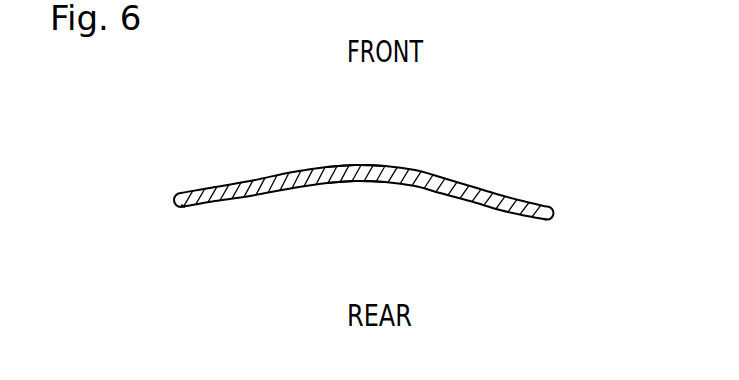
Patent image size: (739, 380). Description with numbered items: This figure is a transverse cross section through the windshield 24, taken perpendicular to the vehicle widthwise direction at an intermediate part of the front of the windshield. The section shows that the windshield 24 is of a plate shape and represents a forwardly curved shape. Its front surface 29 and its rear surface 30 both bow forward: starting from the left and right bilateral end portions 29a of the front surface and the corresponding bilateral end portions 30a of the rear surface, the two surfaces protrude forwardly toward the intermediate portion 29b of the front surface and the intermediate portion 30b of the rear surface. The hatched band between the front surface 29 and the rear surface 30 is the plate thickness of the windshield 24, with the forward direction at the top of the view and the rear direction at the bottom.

The windshield 24 is at (394, 194).
The front surface 29 is at (364, 157).
The bilateral end portion of front surface 29a is at (196, 192).
The intermediate portion of front surface 29b is at (358, 166).
The rear surface 30 is at (364, 217).
The bilateral end portion of rear surface 30a is at (185, 209).
The intermediate portion of rear surface 30b is at (358, 182).